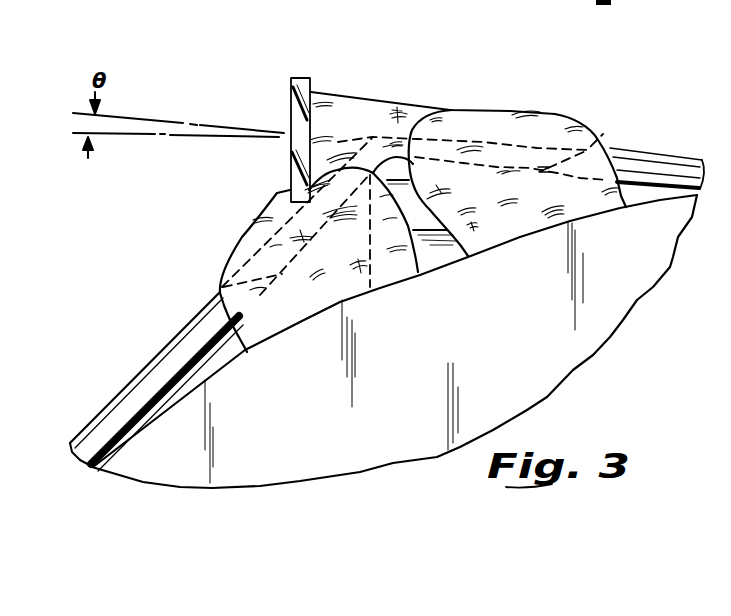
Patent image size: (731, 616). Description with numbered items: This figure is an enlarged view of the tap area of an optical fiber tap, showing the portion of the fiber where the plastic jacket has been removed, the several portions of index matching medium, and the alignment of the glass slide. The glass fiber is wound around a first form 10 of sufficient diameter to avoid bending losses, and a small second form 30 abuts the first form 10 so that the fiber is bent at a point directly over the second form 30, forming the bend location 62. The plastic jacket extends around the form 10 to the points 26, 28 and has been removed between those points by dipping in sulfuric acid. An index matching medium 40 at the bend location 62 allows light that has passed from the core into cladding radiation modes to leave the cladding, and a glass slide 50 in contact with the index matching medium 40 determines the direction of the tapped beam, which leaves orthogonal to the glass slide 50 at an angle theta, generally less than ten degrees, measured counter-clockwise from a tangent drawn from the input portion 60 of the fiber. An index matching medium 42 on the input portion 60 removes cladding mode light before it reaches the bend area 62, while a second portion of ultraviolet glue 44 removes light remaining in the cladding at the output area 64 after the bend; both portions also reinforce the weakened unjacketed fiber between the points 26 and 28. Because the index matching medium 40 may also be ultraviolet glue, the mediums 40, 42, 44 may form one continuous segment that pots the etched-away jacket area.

The first form 10 is at (580, 341).
The point 26 is at (603, 145).
The point 28 is at (221, 276).
The second form 30 is at (438, 247).
The index matching medium 40 is at (362, 100).
The index matching medium 42 is at (552, 113).
The second portion of ultraviolet glue 44 is at (250, 241).
The glass slide 50 is at (298, 77).
The input portion 60 is at (465, 141).
The bend location 62 is at (417, 105).
The output area 64 is at (284, 222).